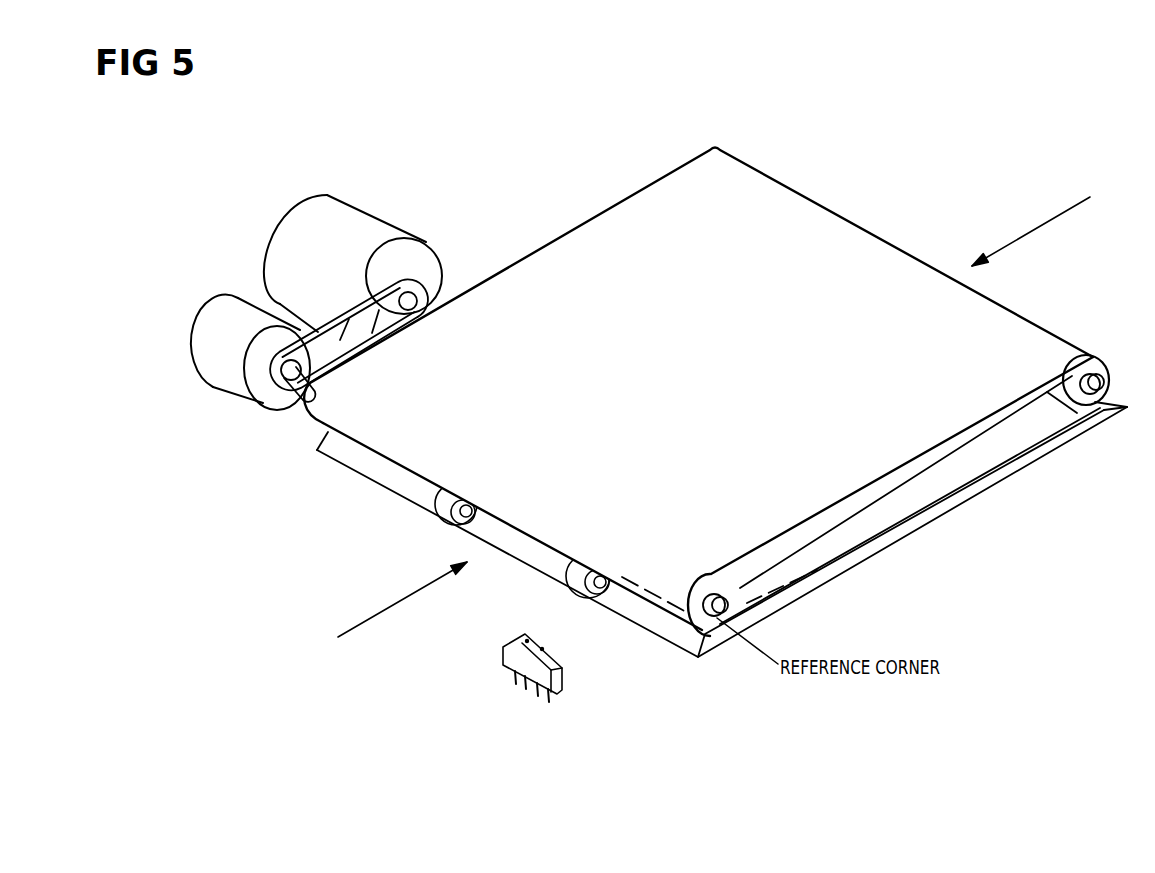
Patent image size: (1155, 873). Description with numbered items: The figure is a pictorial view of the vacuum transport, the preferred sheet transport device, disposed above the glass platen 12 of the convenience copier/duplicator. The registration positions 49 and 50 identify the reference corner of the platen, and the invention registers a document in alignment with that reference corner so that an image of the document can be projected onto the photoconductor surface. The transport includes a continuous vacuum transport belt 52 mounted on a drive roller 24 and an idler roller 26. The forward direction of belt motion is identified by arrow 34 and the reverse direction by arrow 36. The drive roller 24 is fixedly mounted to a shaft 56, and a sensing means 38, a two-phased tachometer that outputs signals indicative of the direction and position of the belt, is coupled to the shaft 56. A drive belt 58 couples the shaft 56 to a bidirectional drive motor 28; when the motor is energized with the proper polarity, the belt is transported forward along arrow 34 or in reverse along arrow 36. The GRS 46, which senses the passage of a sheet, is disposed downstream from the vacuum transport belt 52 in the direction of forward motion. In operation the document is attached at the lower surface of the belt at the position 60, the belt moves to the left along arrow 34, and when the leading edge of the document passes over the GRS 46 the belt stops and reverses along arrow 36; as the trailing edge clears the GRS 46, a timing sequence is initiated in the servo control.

The vacuum transport belt 52 is at (573, 235).
The glass platen 12 is at (893, 533).
The drive roller 24 is at (725, 588).
The idler roller 26 is at (1090, 368).
The document attachment position 60 is at (1122, 397).
The arrow indicating forward direction 34 is at (1023, 233).
The arrow indicating reverse direction 36 is at (400, 598).
The registration position 50 is at (665, 598).
The registration position 49 is at (772, 588).
The bidirectional drive motor 28 is at (304, 198).
The sensing means 38 is at (223, 393).
The drive belt 58 is at (368, 295).
The shaft 56 is at (293, 397).
The GRS 46 is at (548, 673).